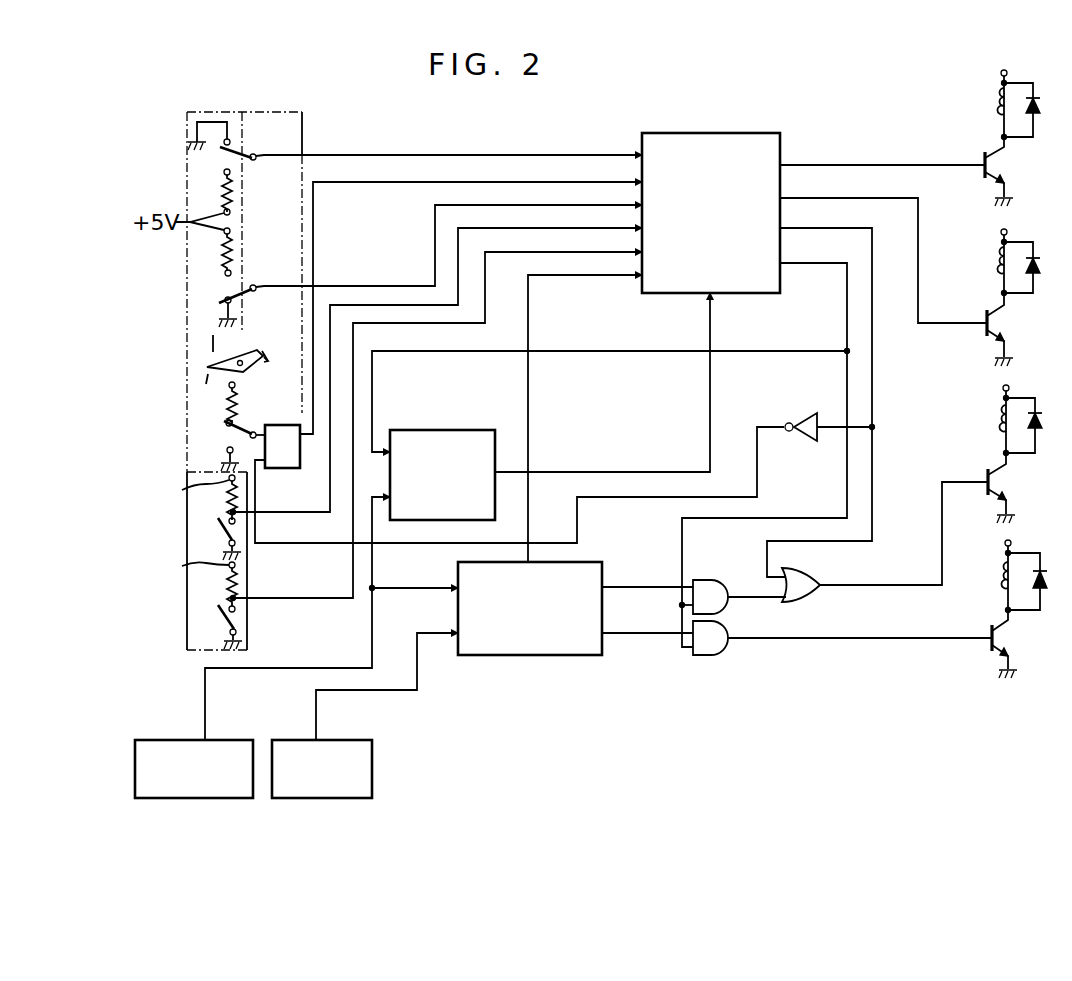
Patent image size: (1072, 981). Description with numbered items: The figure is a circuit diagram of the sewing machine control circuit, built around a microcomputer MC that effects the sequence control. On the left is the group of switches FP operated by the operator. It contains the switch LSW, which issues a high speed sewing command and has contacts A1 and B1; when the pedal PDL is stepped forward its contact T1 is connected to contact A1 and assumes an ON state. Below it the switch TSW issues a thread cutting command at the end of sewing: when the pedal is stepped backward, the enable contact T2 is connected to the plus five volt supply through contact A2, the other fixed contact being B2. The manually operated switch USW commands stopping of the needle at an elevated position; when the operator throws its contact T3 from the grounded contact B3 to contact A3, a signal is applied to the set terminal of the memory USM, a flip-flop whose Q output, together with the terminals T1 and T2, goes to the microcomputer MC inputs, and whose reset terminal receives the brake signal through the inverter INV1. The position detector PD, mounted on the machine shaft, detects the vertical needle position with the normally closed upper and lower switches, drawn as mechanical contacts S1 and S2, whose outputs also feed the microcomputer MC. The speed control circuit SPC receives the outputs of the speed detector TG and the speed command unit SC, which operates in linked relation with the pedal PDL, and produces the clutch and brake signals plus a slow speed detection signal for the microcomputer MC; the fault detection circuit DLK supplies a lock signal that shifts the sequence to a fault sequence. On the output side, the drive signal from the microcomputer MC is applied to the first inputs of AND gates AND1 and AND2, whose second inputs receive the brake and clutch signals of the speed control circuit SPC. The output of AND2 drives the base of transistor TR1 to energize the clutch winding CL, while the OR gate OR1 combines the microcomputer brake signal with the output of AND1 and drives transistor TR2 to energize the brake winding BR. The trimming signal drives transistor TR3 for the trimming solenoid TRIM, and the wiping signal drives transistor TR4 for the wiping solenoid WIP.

The group of switches FP is at (303, 142).
The position detector PD is at (247, 622).
The switch LSW is at (415, 136).
The contact B1 is at (228, 123).
The contact T1 is at (253, 161).
The contact A1 is at (214, 186).
The contact A2 is at (214, 257).
The switch TSW is at (416, 266).
The contact B2 is at (213, 309).
The enable contact T2 is at (253, 291).
The pedal PDL is at (207, 365).
The manually operated switch USW is at (242, 422).
The contact A3 is at (212, 420).
The contact T3 is at (248, 445).
The terminal B3 of USW B3 is at (214, 454).
The memory USM is at (283, 468).
The mechanical contact S1 is at (215, 530).
The mechanical contact S2 is at (218, 621).
The speed detector TG is at (165, 739).
The speed command unit SC is at (356, 740).
The speed control circuit SPC is at (530, 655).
The fault detection circuit DLK is at (418, 430).
The microcomputer MC is at (715, 133).
The inverter INV1 is at (803, 413).
The AND gate AND1 is at (708, 580).
The AND gate AND2 is at (705, 657).
The OR gate OR1 is at (824, 560).
The wiper WIP is at (998, 105).
The trimming solenoid TRIM is at (998, 263).
The brake winding BR is at (1004, 422).
The clutch winding CL is at (1004, 579).
The transistor TR1 is at (1004, 641).
The transistor TR2 is at (1002, 485).
The transistor TR3 is at (1002, 326).
The transistor TR4 is at (1000, 168).